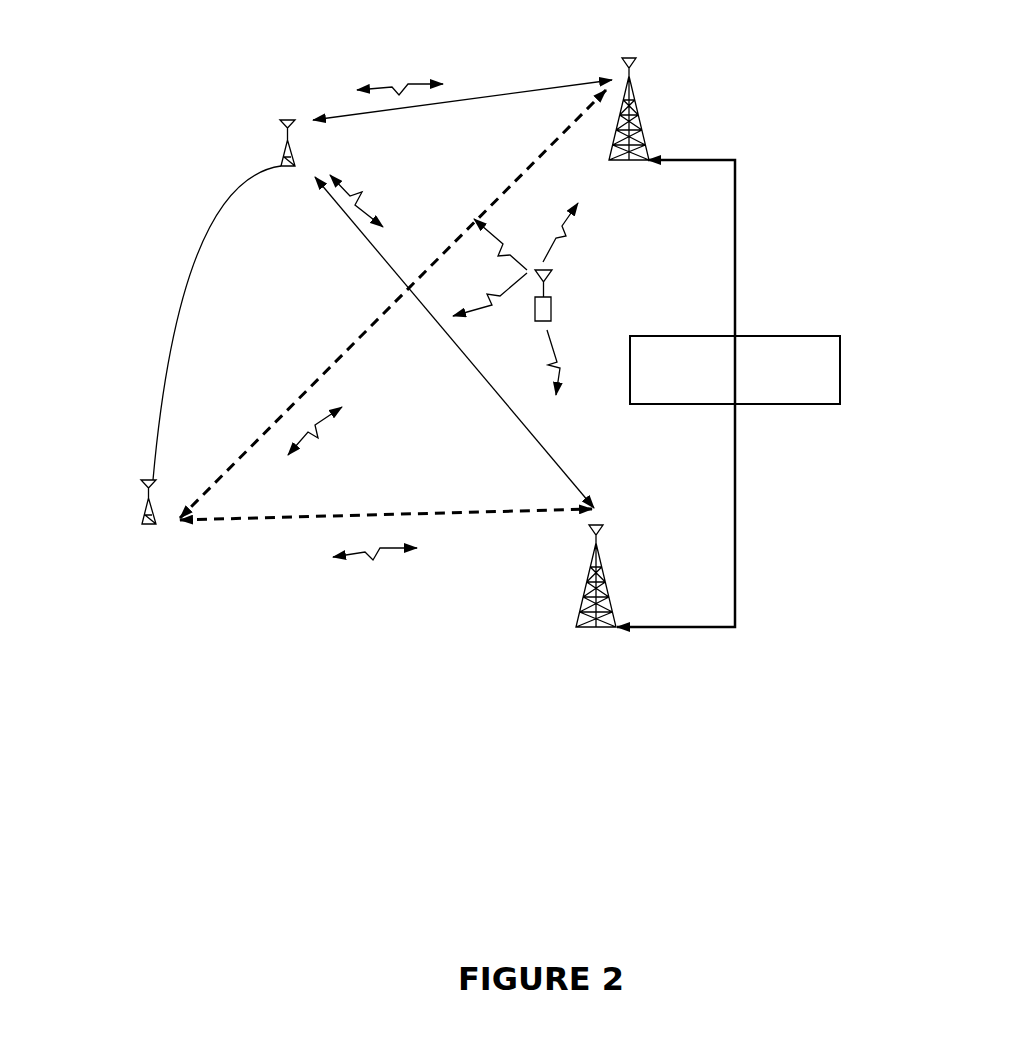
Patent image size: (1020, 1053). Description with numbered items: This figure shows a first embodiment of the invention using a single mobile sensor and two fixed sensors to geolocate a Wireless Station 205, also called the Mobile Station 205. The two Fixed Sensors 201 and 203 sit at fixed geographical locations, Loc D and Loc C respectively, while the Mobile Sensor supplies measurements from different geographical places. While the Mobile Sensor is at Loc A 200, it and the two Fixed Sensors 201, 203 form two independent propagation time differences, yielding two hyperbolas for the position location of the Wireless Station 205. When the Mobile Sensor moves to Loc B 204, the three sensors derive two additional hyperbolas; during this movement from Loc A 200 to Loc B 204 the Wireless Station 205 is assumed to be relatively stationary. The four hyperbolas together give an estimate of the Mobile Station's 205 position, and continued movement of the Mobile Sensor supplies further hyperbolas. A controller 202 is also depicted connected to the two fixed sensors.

The Loc A 200 is at (145, 525).
The Fixed Sensor 201 is at (577, 628).
The controller 202 is at (840, 355).
The Fixed Sensor 203 is at (640, 140).
The Loc B 204 is at (296, 165).
The Wireless Station 205 is at (535, 310).